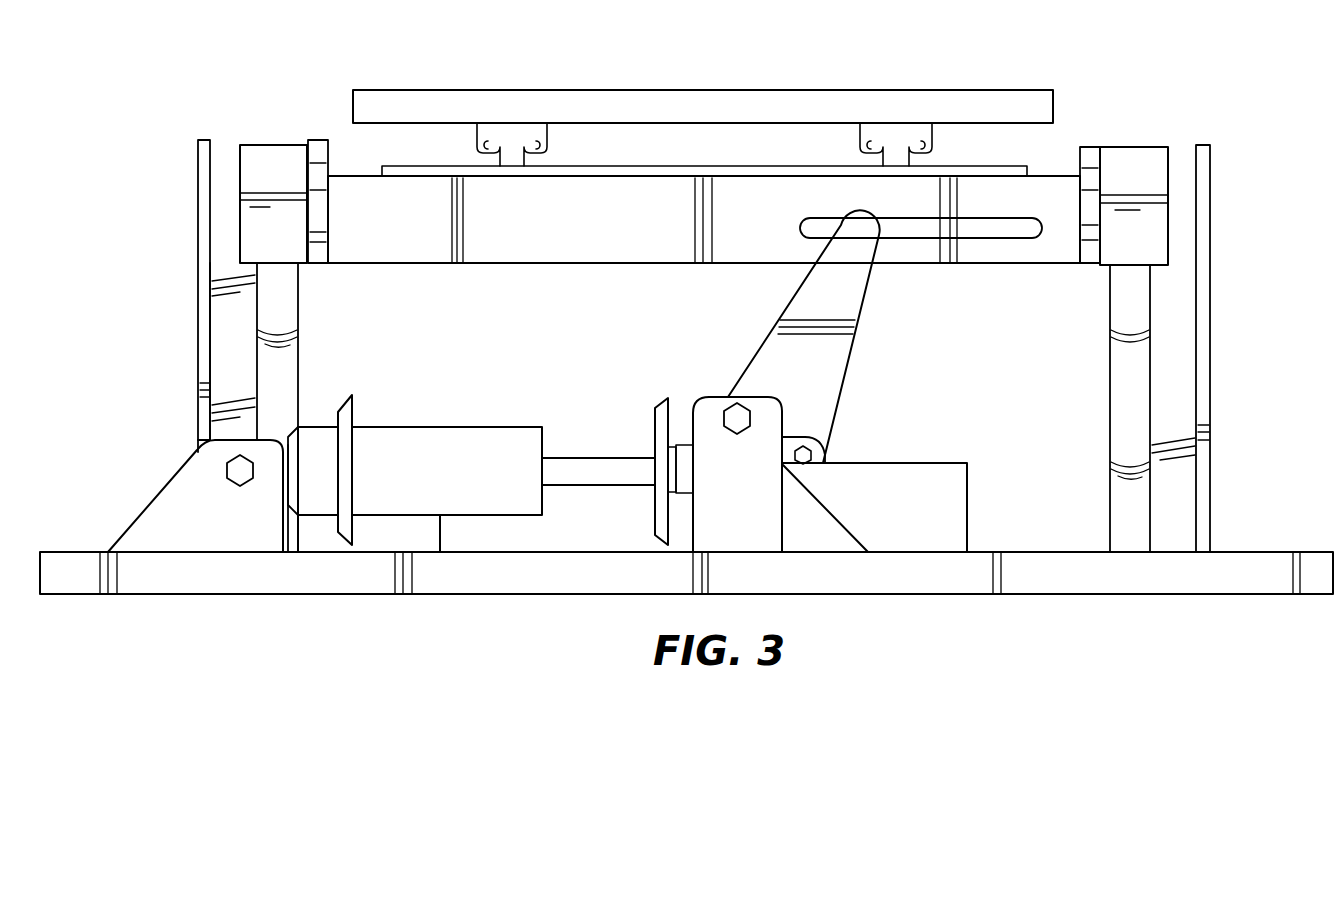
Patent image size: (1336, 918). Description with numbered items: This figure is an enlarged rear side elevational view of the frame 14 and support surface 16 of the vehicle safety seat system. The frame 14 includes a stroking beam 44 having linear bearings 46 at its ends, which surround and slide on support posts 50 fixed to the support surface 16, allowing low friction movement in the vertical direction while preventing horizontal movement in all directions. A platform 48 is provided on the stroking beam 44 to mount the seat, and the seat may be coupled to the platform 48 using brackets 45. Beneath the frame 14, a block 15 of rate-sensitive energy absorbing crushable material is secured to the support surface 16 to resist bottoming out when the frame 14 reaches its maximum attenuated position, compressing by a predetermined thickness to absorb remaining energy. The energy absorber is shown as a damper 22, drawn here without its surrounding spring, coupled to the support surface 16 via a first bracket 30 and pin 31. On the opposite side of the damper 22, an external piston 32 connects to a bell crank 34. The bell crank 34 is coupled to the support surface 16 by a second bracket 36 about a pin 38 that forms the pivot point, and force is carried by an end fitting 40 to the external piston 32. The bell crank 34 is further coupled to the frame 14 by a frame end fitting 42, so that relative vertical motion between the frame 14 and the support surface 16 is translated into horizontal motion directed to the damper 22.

The frame 14 is at (1056, 162).
The block 15 is at (900, 462).
The support surface 16 is at (1250, 551).
The damper 22 is at (463, 426).
The first bracket 30 is at (165, 505).
The pin 31 is at (228, 469).
The external piston 32 is at (626, 456).
The bell crank 34 is at (768, 356).
The second bracket 36 is at (810, 540).
The pin 38 is at (733, 405).
The end fitting 40 is at (823, 456).
The frame end fitting 42 is at (862, 233).
The stroking beam 44 is at (586, 250).
The brackets 45 is at (513, 130).
The linear bearings 46 is at (279, 150).
The platform 48 is at (422, 106).
The support posts 50 is at (200, 270).